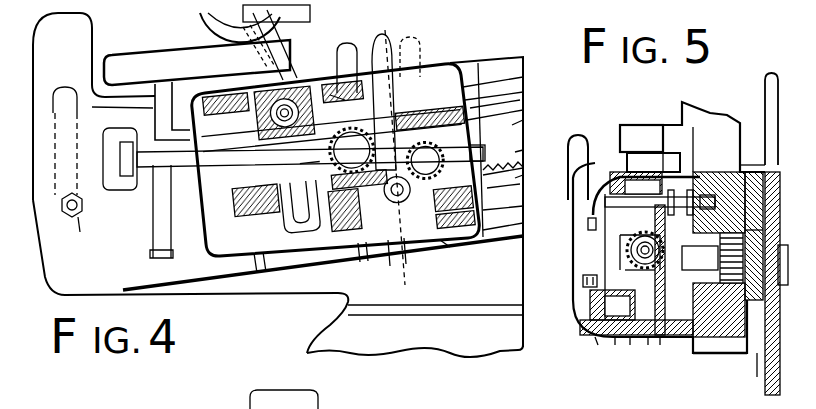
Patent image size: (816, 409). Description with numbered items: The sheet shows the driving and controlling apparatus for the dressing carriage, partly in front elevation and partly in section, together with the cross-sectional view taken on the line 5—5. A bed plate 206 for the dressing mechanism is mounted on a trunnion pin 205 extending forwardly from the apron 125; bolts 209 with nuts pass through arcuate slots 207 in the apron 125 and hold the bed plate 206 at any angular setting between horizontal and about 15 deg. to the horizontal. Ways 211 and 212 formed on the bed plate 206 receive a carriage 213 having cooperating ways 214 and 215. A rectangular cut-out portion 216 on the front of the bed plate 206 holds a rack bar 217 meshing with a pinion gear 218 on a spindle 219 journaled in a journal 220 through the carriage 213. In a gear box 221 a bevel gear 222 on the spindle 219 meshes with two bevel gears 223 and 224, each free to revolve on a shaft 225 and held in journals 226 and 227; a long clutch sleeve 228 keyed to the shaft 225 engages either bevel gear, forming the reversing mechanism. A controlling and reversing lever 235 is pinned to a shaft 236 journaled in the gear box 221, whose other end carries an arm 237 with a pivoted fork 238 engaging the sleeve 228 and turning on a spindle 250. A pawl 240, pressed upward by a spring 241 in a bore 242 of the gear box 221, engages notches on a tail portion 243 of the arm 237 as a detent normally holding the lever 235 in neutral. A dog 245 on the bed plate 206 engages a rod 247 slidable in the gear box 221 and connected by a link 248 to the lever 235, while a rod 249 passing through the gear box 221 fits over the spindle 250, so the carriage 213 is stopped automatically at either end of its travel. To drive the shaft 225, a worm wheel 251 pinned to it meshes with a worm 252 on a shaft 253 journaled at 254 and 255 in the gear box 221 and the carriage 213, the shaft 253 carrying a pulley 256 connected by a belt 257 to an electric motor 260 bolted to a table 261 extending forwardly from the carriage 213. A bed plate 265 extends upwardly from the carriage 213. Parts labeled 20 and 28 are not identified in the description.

In FIG. 4, the section line 5— 5 is at (363, 20).
In FIG. 4, the direction arrow 15 is at (233, 188).
In FIG. 4, the machine frame 20 is at (440, 346).
In FIG. 5, the machine frame 20 is at (752, 355).
In FIG. 4, the frame bracket 28 is at (338, 296).
In FIG. 4, the apron 125 is at (102, 100).
In FIG. 5, the apron 125 is at (768, 75).
In FIG. 5, the trunnion pin 205 is at (786, 285).
In FIG. 4, the bed plate 206 is at (58, 262).
In FIG. 4, the arcuate slot 207 is at (62, 88).
In FIG. 4, the bolt 209 is at (85, 234).
In FIG. 4, the way 211 is at (477, 83).
In FIG. 5, the way 211 is at (778, 316).
In FIG. 4, the way 212 is at (522, 178).
In FIG. 5, the way 212 is at (768, 184).
In FIG. 4, the carriage 213 is at (182, 267).
In FIG. 5, the carriage 213 is at (700, 355).
In FIG. 5, the cooperating way 214 is at (775, 336).
In FIG. 5, the cooperating way 215 is at (775, 165).
In FIG. 4, the rectangular cut-out portion 216 is at (520, 120).
In FIG. 5, the rectangular cut-out portion 216 is at (760, 200).
In FIG. 4, the rack bar 217 is at (521, 148).
In FIG. 5, the rack bar 217 is at (665, 337).
In FIG. 5, the pinion gear 218 is at (762, 240).
In FIG. 5, the spindle 219 is at (648, 338).
In FIG. 5, the journal 220 is at (712, 258).
In FIG. 4, the gear box 221 is at (267, 267).
In FIG. 5, the gear box 221 is at (598, 338).
In FIG. 4, the bevel gear 222 is at (453, 199).
In FIG. 5, the bevel gear 222 is at (660, 338).
In FIG. 4, the bevel gear 223 is at (345, 210).
In FIG. 5, the bevel gear 223 is at (600, 243).
In FIG. 4, the bevel gear 224 is at (455, 220).
In FIG. 4, the shaft 225 is at (246, 206).
In FIG. 5, the shaft 225 is at (598, 255).
In FIG. 4, the journal 226 is at (276, 209).
In FIG. 4, the journal 227 is at (495, 108).
In FIG. 4, the clutch sleeve 228 is at (333, 110).
In FIG. 4, the controlling and reversing lever 235 is at (412, 50).
In FIG. 5, the controlling and reversing lever 235 is at (582, 144).
In FIG. 4, the shaft 236 is at (397, 189).
In FIG. 5, the shaft 236 is at (598, 295).
In FIG. 5, the arm 237 is at (604, 286).
In FIG. 4, the fork 238 is at (359, 180).
In FIG. 4, the pawl 240 is at (358, 248).
In FIG. 5, the pawl 240 is at (590, 327).
In FIG. 4, the spring 241 is at (450, 247).
In FIG. 5, the spring 241 is at (632, 338).
In FIG. 4, the bore 242 is at (390, 250).
In FIG. 5, the bore 242 is at (617, 338).
In FIG. 4, the tail portion 243 is at (386, 153).
In FIG. 5, the tail portion 243 is at (600, 305).
In FIG. 4, the dog 245 is at (92, 205).
In FIG. 4, the rod 247 is at (180, 160).
In FIG. 4, the link 248 is at (276, 45).
In FIG. 4, the rod 249 is at (494, 91).
In FIG. 4, the spindle 250 is at (310, 162).
In FIG. 5, the spindle 250 is at (600, 270).
In FIG. 4, the worm wheel 251 is at (272, 213).
In FIG. 4, the worm 252 is at (331, 90).
In FIG. 5, the worm 252 is at (641, 148).
In FIG. 4, the shaft 253 is at (332, 131).
In FIG. 5, the shaft 253 is at (660, 184).
In FIG. 5, the journal 254 is at (646, 183).
In FIG. 5, the journal 255 is at (722, 149).
In FIG. 5, the pulley 256 is at (700, 172).
In FIG. 4, the belt 257 is at (284, 113).
In FIG. 4, the electric motor 260 is at (162, 22).
In FIG. 4, the table 261 is at (133, 63).
In FIG. 4, the bed plate 265 is at (307, 33).